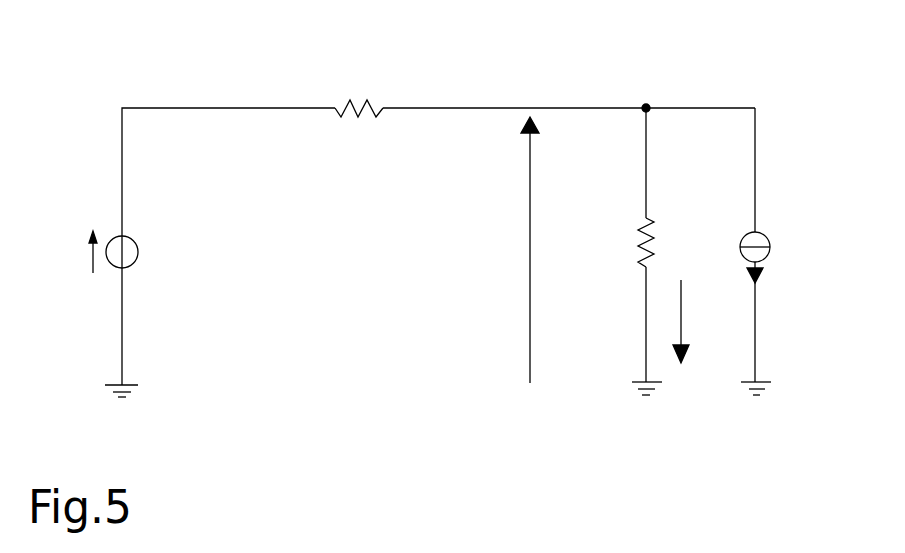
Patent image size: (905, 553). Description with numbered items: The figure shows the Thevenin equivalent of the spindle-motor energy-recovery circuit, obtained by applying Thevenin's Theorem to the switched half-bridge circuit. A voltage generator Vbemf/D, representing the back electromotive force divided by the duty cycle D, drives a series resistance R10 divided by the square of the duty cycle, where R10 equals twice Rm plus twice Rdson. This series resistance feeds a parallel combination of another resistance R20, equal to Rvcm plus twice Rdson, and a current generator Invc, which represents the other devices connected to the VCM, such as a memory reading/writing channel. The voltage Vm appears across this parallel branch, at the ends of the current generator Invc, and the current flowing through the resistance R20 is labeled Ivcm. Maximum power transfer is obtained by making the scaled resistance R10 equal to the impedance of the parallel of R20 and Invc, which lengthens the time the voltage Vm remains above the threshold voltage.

The resistance R10/D^2 R10 is at (383, 62).
The resistance R20 is at (676, 245).
The voltage generator Vbemf/D Vbemf is at (237, 257).
The voltage Vm is at (493, 250).
The current Ivcm through R20 Ivcm is at (709, 321).
The current generator Invc is at (786, 245).